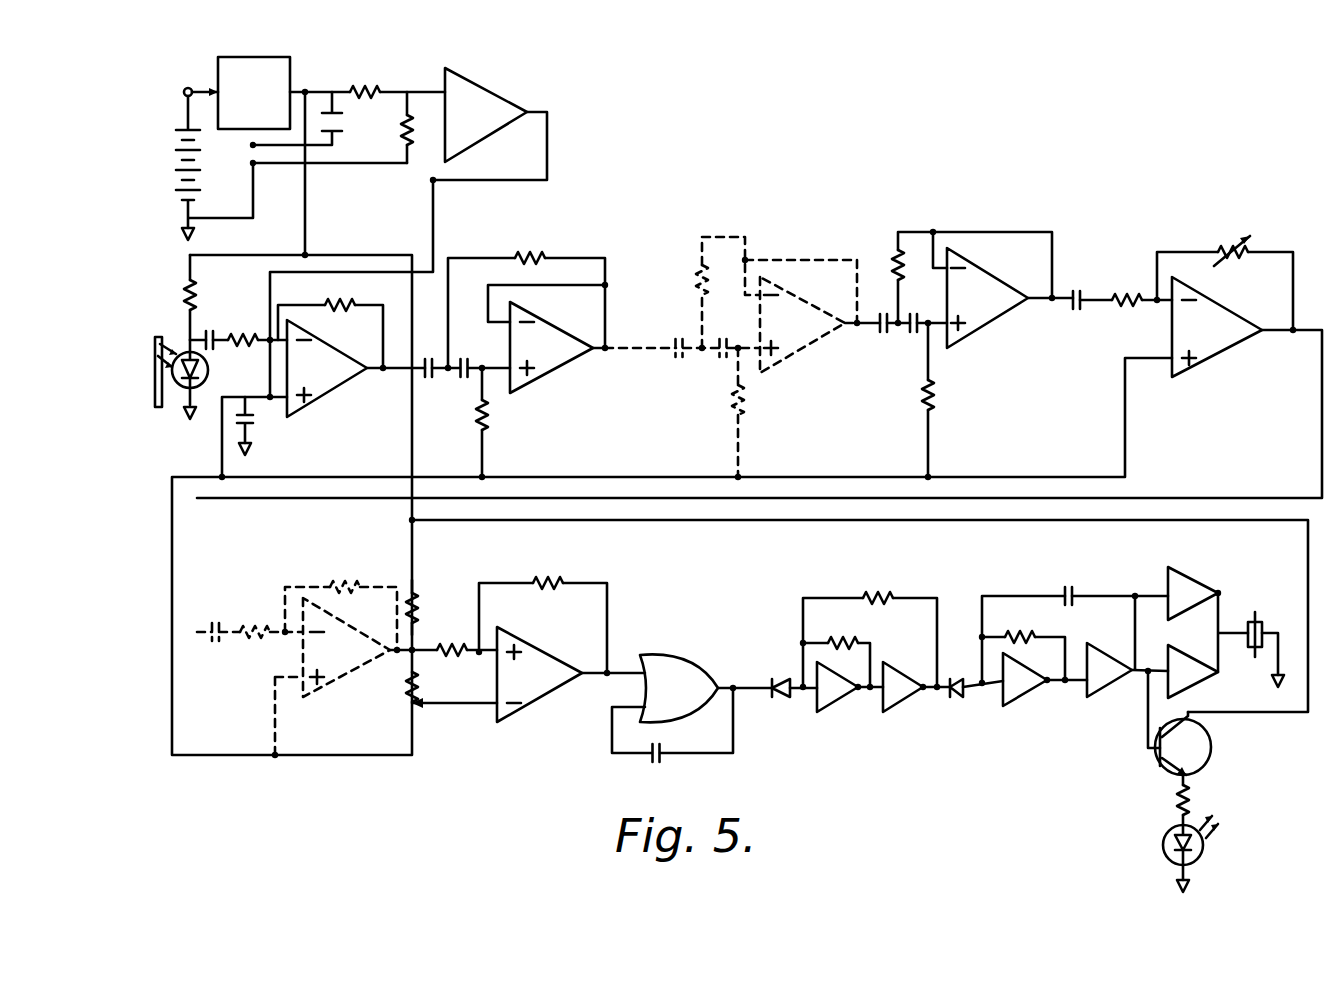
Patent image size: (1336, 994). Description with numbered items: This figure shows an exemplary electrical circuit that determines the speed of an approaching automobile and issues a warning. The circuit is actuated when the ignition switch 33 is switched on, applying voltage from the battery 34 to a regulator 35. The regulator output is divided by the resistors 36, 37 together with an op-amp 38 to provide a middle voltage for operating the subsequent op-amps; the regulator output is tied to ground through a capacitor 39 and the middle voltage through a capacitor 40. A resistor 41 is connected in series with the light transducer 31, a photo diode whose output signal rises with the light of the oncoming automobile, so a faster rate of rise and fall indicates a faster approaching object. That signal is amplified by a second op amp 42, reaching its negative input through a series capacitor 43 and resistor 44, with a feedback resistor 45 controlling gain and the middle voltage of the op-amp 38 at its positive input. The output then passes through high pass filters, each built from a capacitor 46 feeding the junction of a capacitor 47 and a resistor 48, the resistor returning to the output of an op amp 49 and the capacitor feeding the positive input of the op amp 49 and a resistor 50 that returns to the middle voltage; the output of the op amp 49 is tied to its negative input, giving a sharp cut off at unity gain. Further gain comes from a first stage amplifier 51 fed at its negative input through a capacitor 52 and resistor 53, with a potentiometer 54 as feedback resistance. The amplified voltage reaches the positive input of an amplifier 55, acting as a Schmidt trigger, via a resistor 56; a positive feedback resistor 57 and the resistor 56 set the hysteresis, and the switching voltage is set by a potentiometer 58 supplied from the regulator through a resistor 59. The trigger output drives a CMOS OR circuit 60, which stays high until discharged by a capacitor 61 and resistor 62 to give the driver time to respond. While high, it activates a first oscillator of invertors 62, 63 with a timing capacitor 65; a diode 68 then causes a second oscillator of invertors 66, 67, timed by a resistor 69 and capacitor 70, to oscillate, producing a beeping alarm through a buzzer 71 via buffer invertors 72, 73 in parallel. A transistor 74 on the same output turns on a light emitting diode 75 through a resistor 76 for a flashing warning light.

The light transducer 31 is at (178, 392).
The ignition switch 33 is at (186, 90).
The battery 34 is at (180, 168).
The regulator 35 is at (284, 86).
The resistor 36 is at (388, 74).
The resistor 37 is at (413, 142).
The op-amp 38 is at (500, 110).
The capacitor 39 is at (340, 128).
The capacitor 40 is at (250, 426).
The resistor 41 is at (186, 300).
The second op amp 42 is at (338, 384).
The capacitor 43 is at (217, 334).
The resistor 44 is at (240, 347).
The feedback resistor 45 is at (338, 313).
The capacitor 46 is at (431, 380).
The capacitor 47 is at (474, 352).
The resistor 48 is at (528, 256).
The op amp 49 is at (565, 362).
The resistor 50 is at (488, 428).
The first stage amplifier 51 is at (1222, 346).
The capacitor 52 is at (1074, 314).
The resistor 53 is at (1130, 284).
The potentiometer 54 is at (1231, 246).
The amplifier 55 is at (551, 690).
The resistor 56 is at (453, 657).
The positive feedback resistor 57 is at (546, 582).
The potentiometer 58 is at (404, 700).
The resistor 59 is at (416, 612).
The CMOS OR circuit 60 is at (698, 673).
The capacitor 61 is at (648, 763).
The invertor 62 is at (838, 698).
The invertor 63 is at (900, 699).
The timing capacitor 65 is at (871, 597).
The CMOS hex invertor 66 is at (1022, 693).
The CMOS hex invertor 67 is at (1106, 687).
The diode 68 is at (958, 695).
The resistor 69 is at (1037, 637).
The capacitor 70 is at (1090, 578).
The buzzer 71 is at (1256, 621).
The invertor 72 is at (1195, 590).
The invertor 73 is at (1196, 686).
The transistor 74 is at (1166, 766).
The light emitting diode 75 is at (1204, 848).
The resistor 76 is at (1178, 803).